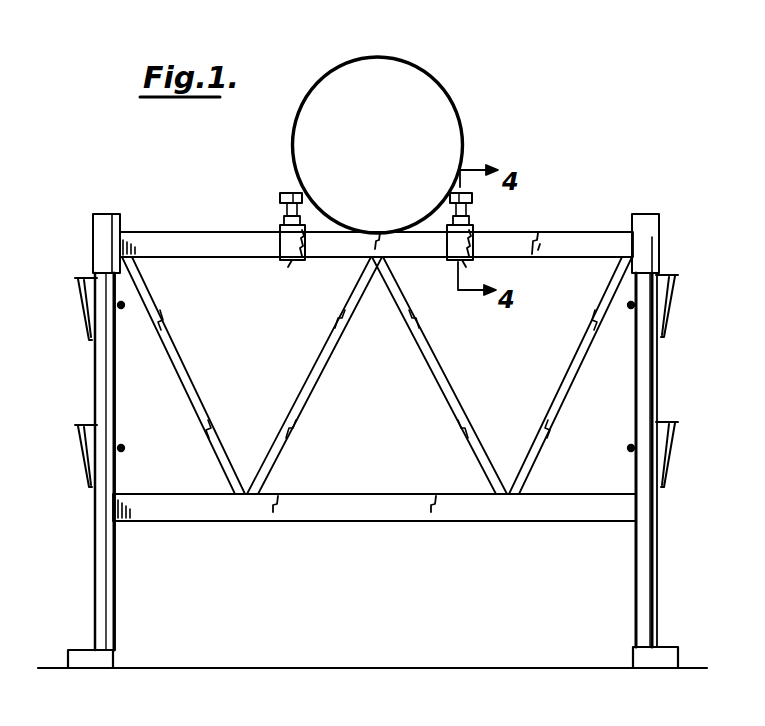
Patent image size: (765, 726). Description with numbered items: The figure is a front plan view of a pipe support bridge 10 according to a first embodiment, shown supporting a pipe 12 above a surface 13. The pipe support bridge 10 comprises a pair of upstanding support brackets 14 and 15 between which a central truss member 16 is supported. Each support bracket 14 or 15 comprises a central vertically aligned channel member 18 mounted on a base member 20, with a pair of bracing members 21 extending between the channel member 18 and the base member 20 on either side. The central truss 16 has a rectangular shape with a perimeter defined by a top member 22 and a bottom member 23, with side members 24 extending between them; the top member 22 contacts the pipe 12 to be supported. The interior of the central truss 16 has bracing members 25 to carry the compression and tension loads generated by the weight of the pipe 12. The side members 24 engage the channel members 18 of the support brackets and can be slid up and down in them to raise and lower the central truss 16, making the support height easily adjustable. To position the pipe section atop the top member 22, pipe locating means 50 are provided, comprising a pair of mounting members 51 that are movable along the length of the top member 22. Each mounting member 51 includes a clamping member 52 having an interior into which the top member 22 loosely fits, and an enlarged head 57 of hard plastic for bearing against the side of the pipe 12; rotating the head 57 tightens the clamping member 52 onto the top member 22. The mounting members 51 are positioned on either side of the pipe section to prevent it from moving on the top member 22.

The pipe support bridge 10 is at (622, 166).
The pipe 12 is at (448, 92).
The surface 13 is at (412, 665).
The support bracket 14 is at (96, 560).
The support bracket 15 is at (654, 594).
The central truss member 16 is at (178, 226).
The channel member 18 is at (101, 236).
The base member 20 is at (80, 648).
The bracing member 21 is at (100, 372).
The top member 22 is at (536, 240).
The bottom member 23 is at (371, 512).
The side member 24 is at (116, 436).
The bracing member 25 is at (320, 346).
The pipe locating means 50 is at (364, 216).
The mounting member 51 is at (268, 236).
The clamping member 52 is at (288, 260).
The enlarged head 57 is at (304, 200).